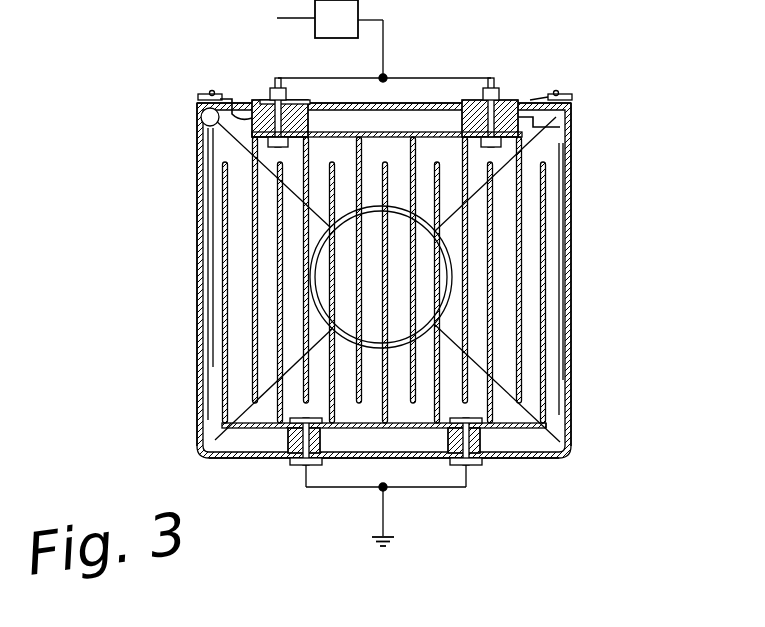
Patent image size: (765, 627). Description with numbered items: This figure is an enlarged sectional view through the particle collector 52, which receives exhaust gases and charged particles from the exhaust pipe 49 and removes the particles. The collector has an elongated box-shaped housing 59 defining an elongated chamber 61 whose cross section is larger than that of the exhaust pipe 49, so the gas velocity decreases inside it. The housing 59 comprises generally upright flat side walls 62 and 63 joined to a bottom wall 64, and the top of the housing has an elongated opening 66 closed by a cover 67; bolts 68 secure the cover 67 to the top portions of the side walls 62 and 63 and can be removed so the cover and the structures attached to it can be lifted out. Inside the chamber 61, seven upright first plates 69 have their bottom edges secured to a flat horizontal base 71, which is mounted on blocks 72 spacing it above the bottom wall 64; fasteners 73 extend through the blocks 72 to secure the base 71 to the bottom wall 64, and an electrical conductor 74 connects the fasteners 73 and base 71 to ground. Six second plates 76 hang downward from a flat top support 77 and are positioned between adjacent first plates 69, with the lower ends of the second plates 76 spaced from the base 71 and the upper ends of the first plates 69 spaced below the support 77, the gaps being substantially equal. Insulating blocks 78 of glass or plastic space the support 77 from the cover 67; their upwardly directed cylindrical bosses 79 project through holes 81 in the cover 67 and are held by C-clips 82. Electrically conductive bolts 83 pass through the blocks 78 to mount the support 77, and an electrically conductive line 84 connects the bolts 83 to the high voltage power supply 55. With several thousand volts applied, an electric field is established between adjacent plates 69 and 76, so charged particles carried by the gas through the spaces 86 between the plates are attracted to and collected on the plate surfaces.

The exhaust pipe 49 is at (378, 348).
The particle collector 52 is at (172, 213).
The high voltage power supply 55 is at (318, 19).
The housing 59 is at (380, 303).
The chamber 61 is at (210, 362).
The side wall 62 is at (197, 266).
The side wall 63 is at (572, 300).
The bottom wall 64 is at (538, 460).
The opening 66 is at (203, 118).
The cover 67 is at (533, 100).
The bolts 68 is at (206, 96).
The first plates 69 is at (493, 368).
The base 71 is at (550, 428).
The blocks 72 is at (445, 440).
The fasteners 73 is at (300, 468).
The electrical conductor 74 is at (422, 490).
The second plates 76 is at (250, 150).
The top support 77 is at (417, 133).
The insulating blocks 78 is at (238, 100).
The cylindrical bosses 79 is at (286, 100).
The holes 81 is at (292, 108).
The C-clips 82 is at (258, 105).
The bolts 83 is at (308, 122).
The electrically conductive line 84 is at (384, 47).
The spaces 86 is at (263, 380).